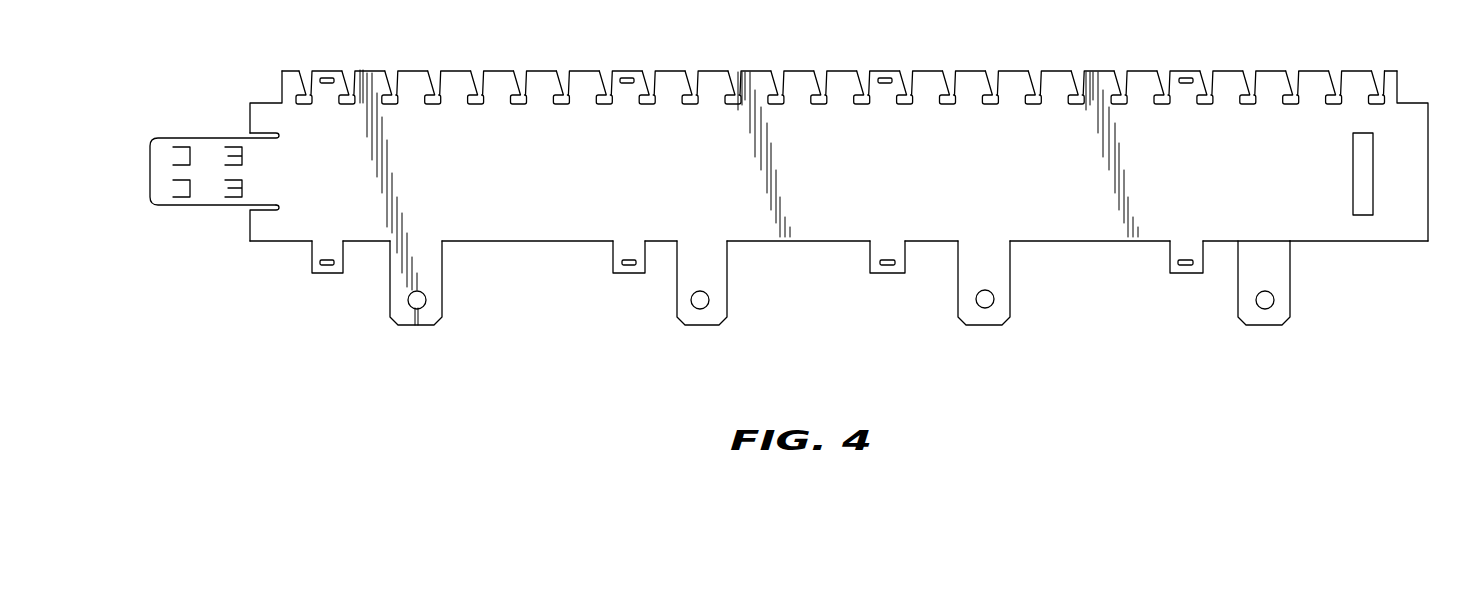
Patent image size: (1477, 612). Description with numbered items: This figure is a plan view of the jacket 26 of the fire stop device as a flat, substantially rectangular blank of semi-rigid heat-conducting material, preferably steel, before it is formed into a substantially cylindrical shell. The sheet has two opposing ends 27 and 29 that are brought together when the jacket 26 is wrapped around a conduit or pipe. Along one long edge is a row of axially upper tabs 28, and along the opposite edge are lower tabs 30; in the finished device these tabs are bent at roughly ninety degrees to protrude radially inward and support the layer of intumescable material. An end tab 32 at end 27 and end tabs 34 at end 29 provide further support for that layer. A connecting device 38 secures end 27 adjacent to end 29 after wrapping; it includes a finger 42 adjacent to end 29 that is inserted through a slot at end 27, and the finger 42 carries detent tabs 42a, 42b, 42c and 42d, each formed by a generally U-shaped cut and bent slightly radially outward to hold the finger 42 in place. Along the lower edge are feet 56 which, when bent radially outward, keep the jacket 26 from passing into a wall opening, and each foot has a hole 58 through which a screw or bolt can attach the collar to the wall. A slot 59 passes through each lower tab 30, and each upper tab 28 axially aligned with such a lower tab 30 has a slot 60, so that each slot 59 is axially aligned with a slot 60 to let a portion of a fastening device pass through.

The jacket 26 is at (808, 233).
The end 27 is at (1425, 105).
The upper tabs 28 is at (792, 77).
The end 29 is at (248, 228).
The lower tabs 30 is at (613, 265).
The end tab 32 is at (1420, 228).
The end tabs 34 is at (263, 115).
The connecting device 38 is at (1415, 163).
The finger 42 is at (218, 198).
The detent tab 42a is at (242, 188).
The detent tab 42b is at (242, 156).
The detent tab 42c is at (180, 147).
The detent tab 42d is at (180, 197).
The feet 56 is at (967, 315).
The hole 58 is at (985, 300).
The slot 59 is at (628, 266).
The slot 60 is at (628, 77).